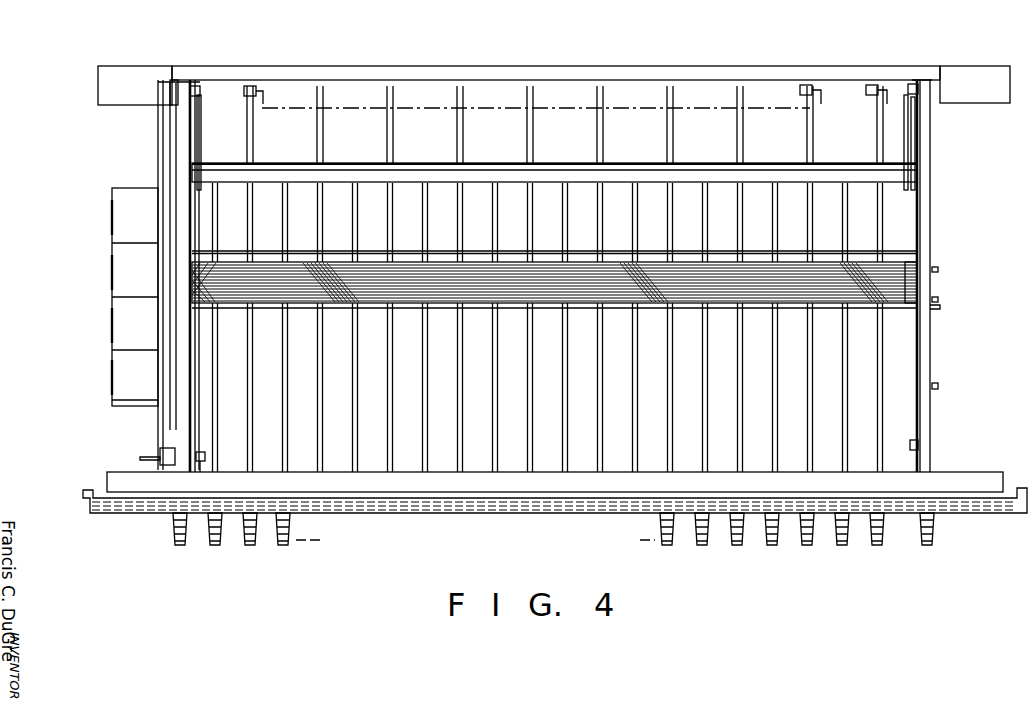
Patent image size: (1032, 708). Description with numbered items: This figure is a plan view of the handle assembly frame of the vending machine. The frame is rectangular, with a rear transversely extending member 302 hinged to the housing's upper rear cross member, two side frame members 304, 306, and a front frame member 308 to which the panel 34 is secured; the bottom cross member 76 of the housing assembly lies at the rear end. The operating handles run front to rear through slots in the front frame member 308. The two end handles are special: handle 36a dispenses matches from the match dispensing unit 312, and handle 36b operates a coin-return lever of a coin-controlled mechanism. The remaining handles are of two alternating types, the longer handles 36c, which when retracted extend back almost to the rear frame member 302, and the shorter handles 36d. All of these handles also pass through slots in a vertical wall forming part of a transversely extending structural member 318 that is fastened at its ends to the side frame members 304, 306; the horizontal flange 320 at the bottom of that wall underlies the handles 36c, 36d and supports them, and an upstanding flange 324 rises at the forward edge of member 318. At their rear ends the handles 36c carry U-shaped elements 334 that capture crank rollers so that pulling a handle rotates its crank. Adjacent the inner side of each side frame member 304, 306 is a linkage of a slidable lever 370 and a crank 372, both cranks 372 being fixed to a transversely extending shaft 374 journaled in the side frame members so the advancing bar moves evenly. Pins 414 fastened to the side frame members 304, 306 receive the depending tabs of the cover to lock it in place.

The transversely extending member 302 is at (392, 66).
The bottom cross member 76 is at (979, 95).
The side frame member 304 is at (185, 425).
The side frame member 306 is at (932, 355).
The front frame member 308 is at (122, 472).
The match dispensing unit 312 is at (95, 337).
The transversely extending structural member 318 is at (905, 268).
The horizontal flange 320 is at (895, 250).
The upstanding flange 324 is at (770, 302).
The U-shaped element 334 is at (262, 100).
The panel 34 is at (100, 513).
The end handle 36a is at (180, 545).
The end handle 36b is at (927, 545).
The handle 36c is at (317, 142).
The handle 36d is at (417, 195).
The slidable lever 370 is at (915, 140).
The crank 372 is at (200, 140).
The transversely extending shaft 374 is at (545, 168).
The pin 414 is at (200, 91).